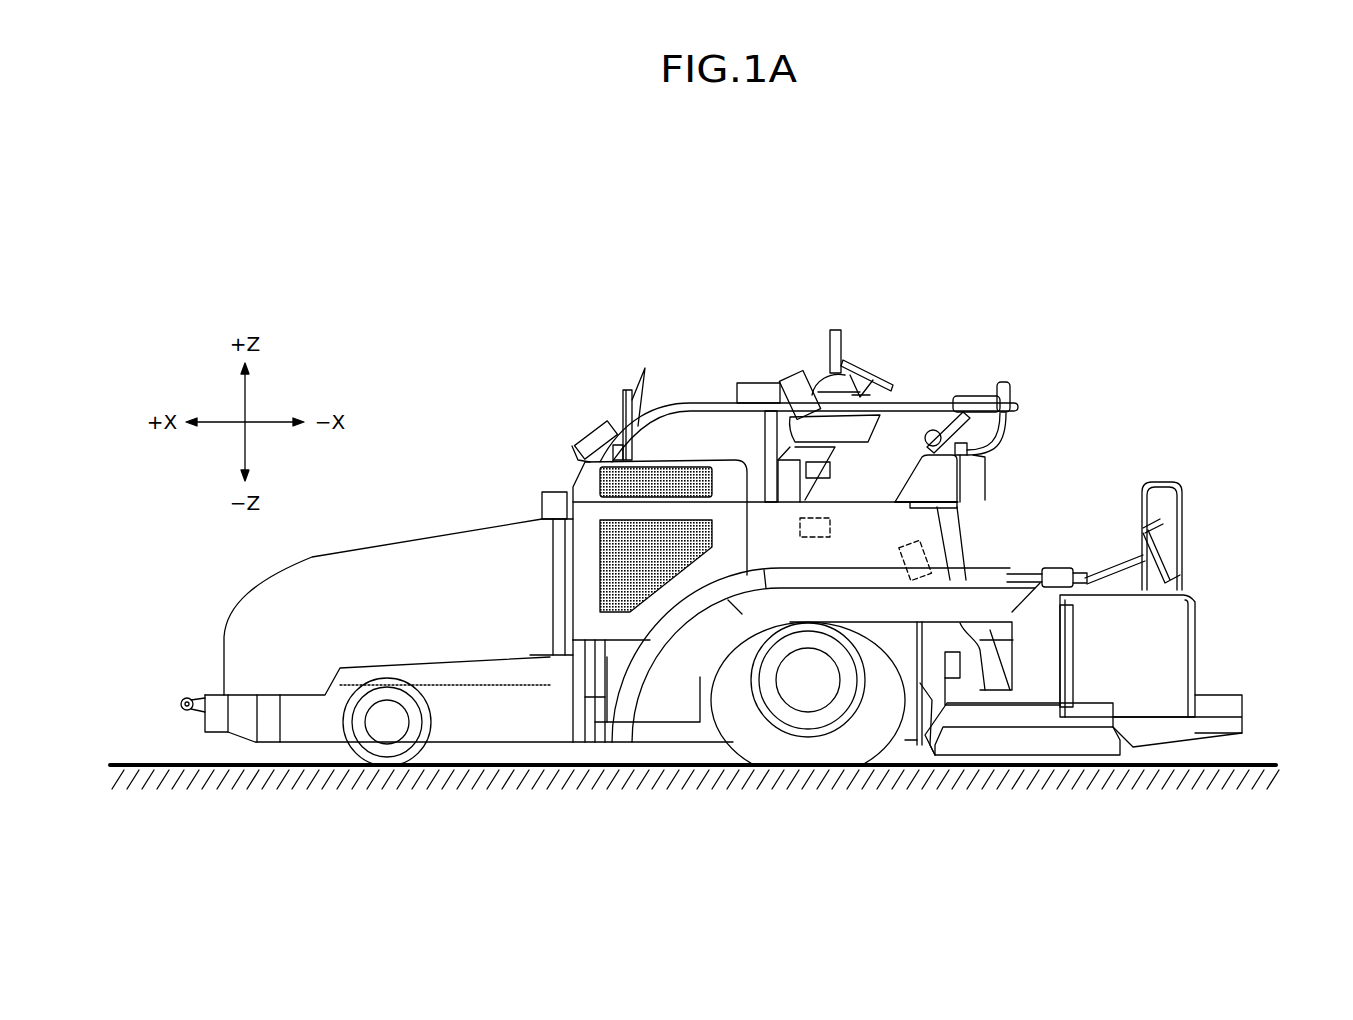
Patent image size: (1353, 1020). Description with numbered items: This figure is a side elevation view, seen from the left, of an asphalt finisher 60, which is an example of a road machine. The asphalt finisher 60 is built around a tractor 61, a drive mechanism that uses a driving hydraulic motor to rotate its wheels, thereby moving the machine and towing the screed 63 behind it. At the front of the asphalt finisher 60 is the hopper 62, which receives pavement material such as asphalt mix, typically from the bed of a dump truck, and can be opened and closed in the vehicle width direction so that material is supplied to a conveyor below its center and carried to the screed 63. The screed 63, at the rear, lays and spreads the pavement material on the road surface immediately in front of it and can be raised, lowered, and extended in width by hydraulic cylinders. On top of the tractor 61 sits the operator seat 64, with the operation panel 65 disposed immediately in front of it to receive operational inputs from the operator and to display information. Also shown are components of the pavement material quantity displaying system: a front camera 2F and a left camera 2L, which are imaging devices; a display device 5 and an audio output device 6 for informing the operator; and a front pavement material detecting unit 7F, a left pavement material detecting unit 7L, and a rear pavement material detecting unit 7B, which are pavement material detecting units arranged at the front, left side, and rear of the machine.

The front camera 2F is at (585, 434).
The left camera 2L is at (748, 383).
The display device 5 is at (838, 332).
The audio output device 6 is at (835, 526).
The front pavement material detecting unit 7F is at (563, 452).
The left pavement material detecting unit 7L is at (793, 374).
The rear pavement material detecting unit 7B is at (935, 559).
The asphalt finisher 60 is at (1040, 338).
The tractor 61 is at (674, 748).
The hopper 62 is at (203, 632).
The screed 63 is at (1223, 640).
The operator seat 64 is at (1000, 386).
The operation panel 65 is at (812, 373).